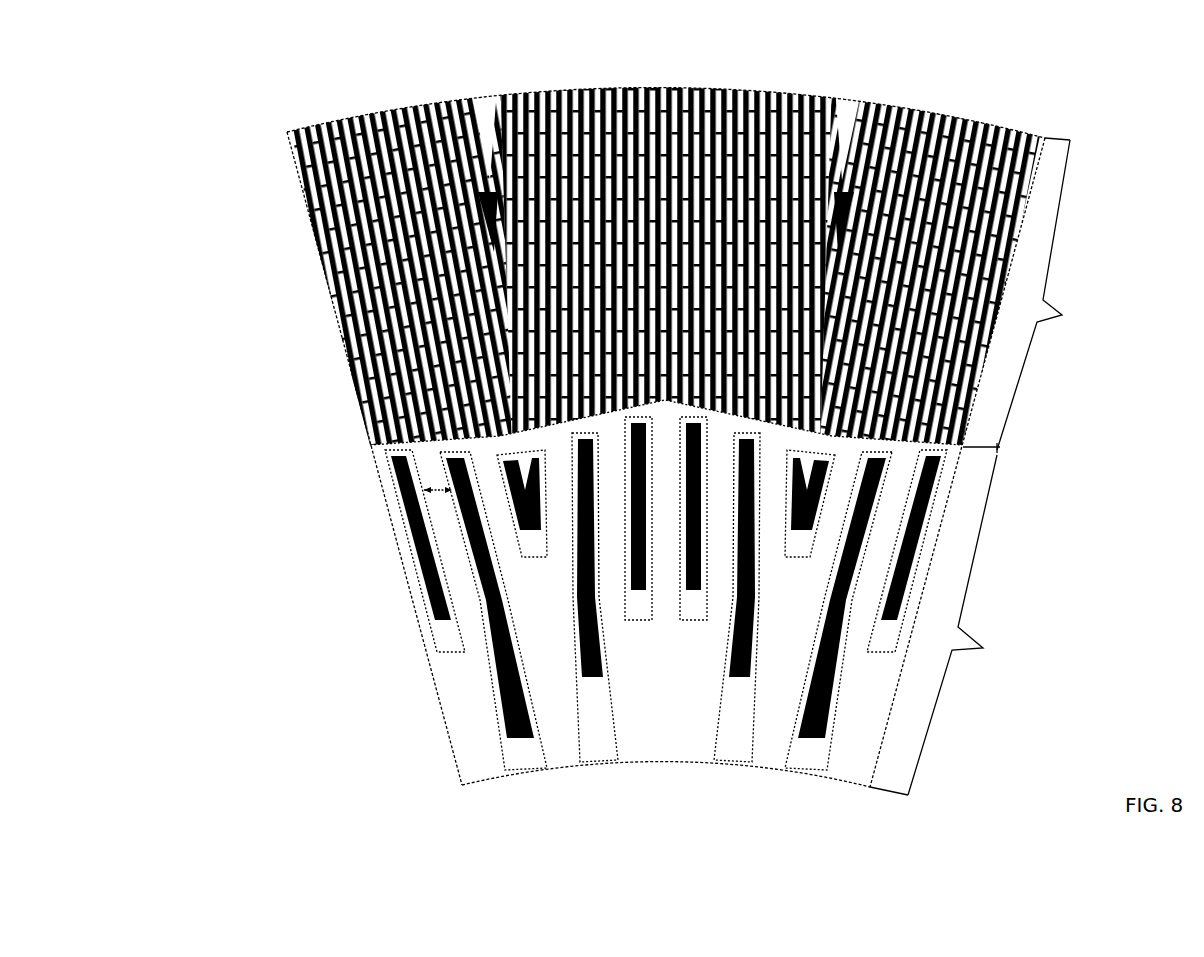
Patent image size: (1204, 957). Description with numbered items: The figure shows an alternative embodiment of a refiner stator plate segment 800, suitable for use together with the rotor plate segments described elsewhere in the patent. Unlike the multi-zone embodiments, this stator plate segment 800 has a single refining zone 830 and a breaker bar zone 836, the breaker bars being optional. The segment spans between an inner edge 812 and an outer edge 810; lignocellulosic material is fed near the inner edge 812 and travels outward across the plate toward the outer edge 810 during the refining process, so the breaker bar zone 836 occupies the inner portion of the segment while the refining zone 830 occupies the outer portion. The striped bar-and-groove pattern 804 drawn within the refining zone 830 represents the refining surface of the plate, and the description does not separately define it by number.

The stator plate segment 800 is at (296, 113).
The fine stripe electrode region 804 is at (322, 311).
The outer edge 810 is at (618, 87).
The inner edge 812 is at (665, 762).
The refining zone 830 is at (1037, 296).
The breaker bar zone 836 is at (709, 606).